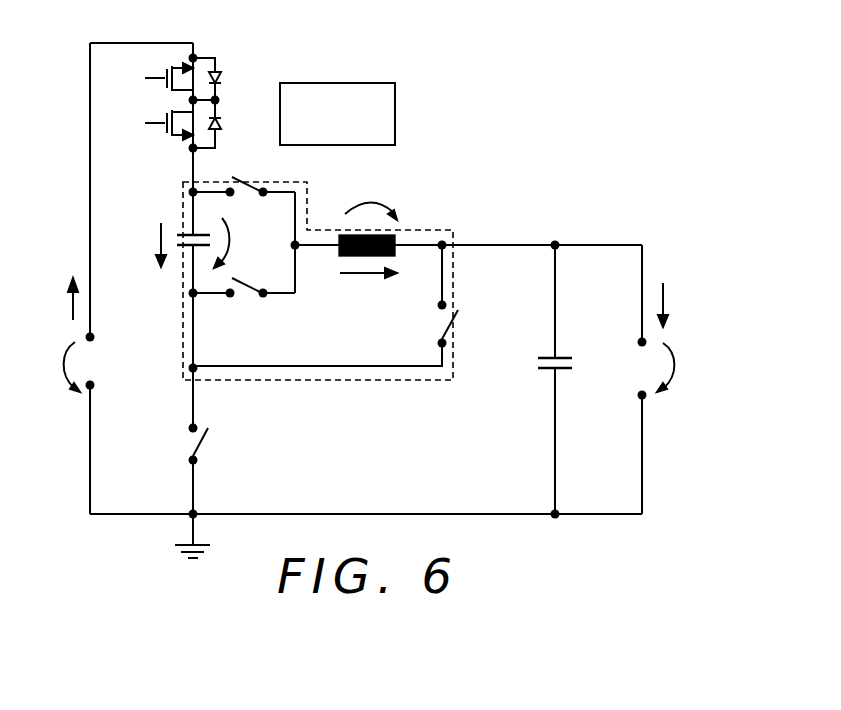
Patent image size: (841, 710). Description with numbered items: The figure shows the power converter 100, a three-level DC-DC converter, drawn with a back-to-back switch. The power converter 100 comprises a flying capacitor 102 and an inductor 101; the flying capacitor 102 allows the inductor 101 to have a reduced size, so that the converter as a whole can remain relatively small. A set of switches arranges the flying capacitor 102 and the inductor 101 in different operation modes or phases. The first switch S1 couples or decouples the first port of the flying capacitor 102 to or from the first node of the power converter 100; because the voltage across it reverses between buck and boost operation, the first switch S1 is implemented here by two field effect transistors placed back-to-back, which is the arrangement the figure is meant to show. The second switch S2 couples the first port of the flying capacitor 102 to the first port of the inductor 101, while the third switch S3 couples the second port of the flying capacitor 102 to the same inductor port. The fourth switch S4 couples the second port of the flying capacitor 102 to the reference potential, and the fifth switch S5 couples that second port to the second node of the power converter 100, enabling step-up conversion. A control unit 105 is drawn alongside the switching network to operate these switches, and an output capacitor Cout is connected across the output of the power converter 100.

The power converter 100 is at (503, 133).
The inductor 101 is at (396, 240).
The flying capacitor 102 is at (185, 232).
The control unit 105 is at (395, 106).
The first switch S1 is at (201, 103).
The second switch S2 is at (244, 172).
The third switch S3 is at (244, 301).
The fourth switch S4 is at (180, 442).
The fifth switch S5 is at (468, 324).
The output capacitor Cout is at (572, 379).